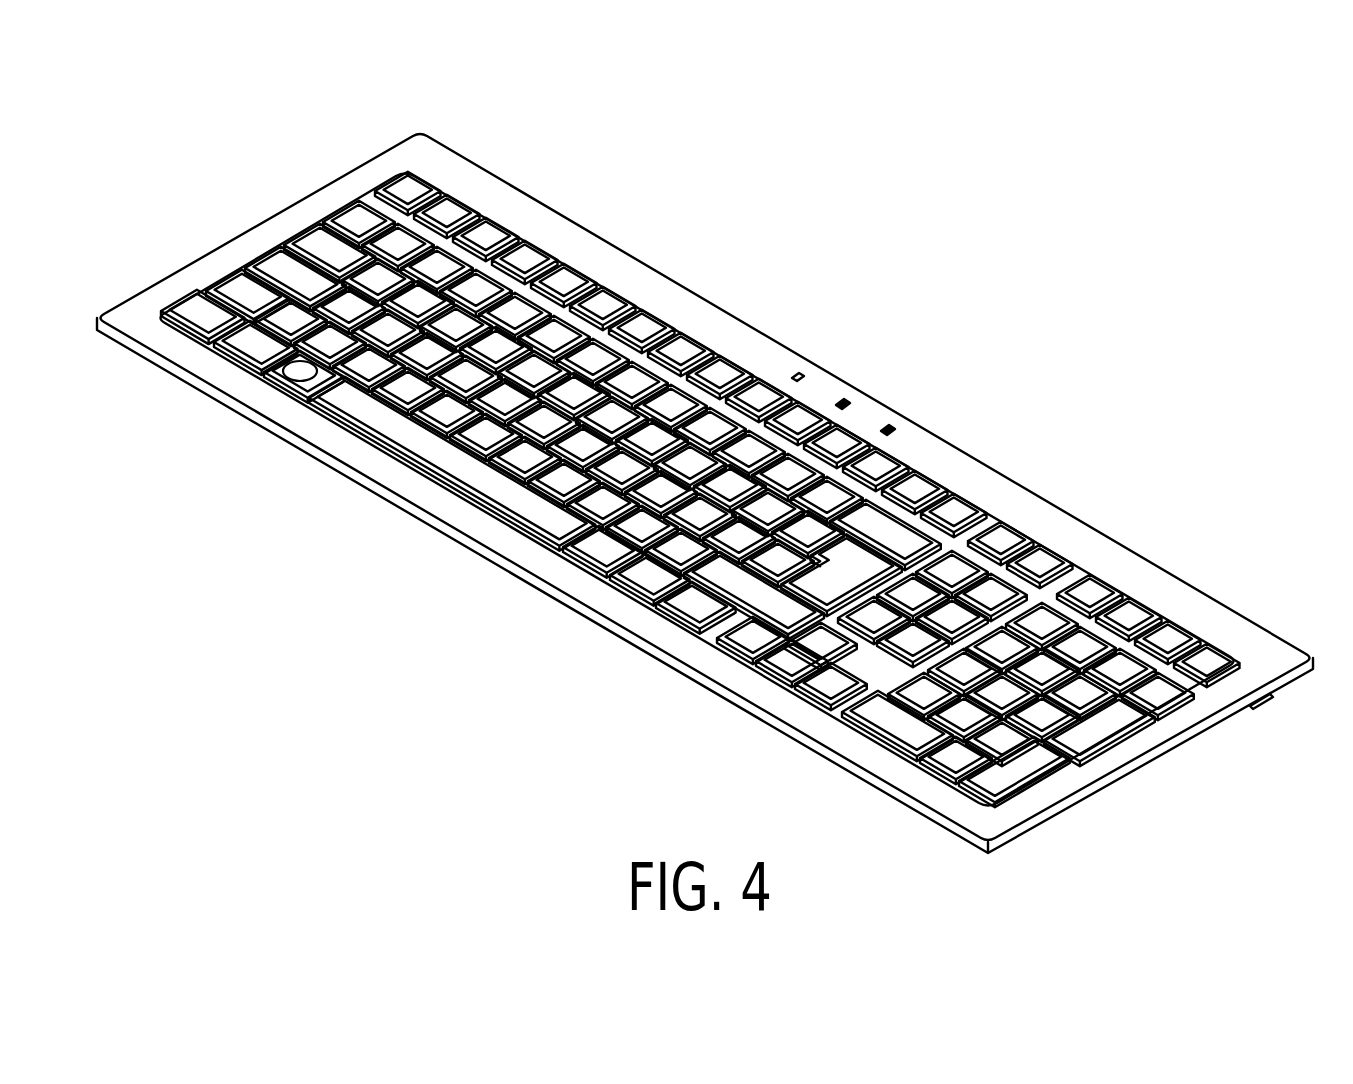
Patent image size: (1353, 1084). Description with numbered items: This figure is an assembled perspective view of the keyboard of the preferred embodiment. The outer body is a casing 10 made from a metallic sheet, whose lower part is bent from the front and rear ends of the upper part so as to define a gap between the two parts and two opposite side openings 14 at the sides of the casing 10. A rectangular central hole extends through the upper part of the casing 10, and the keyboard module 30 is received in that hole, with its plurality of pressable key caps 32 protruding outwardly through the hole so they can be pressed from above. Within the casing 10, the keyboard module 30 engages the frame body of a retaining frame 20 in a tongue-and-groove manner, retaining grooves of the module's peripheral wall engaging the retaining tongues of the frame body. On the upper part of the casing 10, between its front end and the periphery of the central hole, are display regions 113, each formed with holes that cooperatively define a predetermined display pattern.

The casing 10 is at (1213, 615).
The side openings 14 is at (1285, 692).
The retaining frame 20 is at (1220, 716).
The keyboard module 30 is at (1085, 599).
The key caps 32 is at (997, 543).
The display regions 113 is at (889, 424).